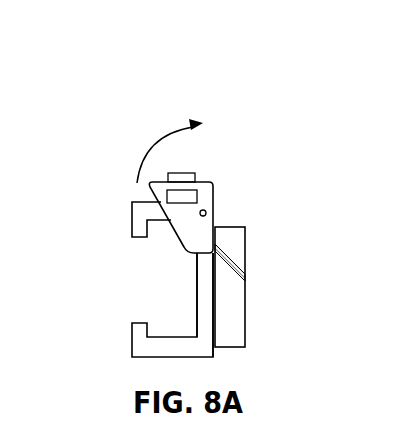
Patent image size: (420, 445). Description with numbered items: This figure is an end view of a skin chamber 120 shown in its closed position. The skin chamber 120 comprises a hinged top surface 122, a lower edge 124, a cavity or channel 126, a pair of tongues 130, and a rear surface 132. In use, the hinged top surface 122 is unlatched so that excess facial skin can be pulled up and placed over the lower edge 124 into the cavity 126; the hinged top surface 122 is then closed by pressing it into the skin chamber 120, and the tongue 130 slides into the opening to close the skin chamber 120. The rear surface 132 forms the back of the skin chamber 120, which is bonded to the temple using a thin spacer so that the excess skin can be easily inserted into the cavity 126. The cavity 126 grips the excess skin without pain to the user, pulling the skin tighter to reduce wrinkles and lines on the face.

The skin chamber 120 is at (128, 72).
The hinged top surface 122 is at (207, 183).
The lower edge 124 is at (132, 350).
The cavity 126 is at (145, 288).
The tongue 130 is at (132, 225).
The rear surface 132 is at (245, 287).